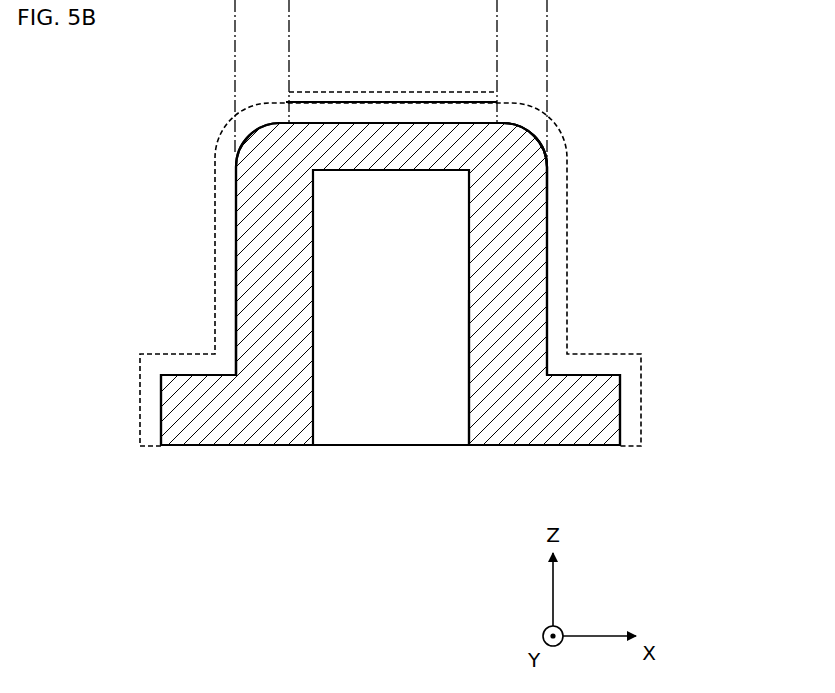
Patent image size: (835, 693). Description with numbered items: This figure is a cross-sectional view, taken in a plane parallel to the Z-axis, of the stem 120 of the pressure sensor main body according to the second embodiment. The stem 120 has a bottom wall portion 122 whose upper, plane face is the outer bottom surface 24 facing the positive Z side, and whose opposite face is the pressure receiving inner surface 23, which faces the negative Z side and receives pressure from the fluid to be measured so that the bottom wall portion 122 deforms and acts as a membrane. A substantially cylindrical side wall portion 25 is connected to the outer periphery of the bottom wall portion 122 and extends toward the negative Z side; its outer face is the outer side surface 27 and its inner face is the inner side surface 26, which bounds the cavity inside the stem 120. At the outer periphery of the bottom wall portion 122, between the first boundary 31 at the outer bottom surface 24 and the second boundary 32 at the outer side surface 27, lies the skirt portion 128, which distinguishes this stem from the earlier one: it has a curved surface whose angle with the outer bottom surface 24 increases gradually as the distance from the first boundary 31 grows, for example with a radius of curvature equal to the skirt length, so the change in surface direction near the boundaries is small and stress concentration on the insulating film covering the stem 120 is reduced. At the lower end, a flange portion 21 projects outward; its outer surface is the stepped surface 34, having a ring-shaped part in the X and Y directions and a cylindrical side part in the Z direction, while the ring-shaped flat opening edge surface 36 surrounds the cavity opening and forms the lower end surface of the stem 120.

The stem 120 is at (676, 51).
The bottom wall portion 122 is at (417, 137).
The skirt portion 128 is at (248, 137).
The flange portion 21 is at (182, 391).
The pressure receiving inner surface 23 is at (375, 168).
The outer bottom surface 24 is at (380, 101).
The side wall portion 25 is at (262, 307).
The inner side surface 26 is at (468, 383).
The outer side surface 27 is at (236, 255).
The first boundary 31 is at (505, 101).
The second boundary 32 is at (548, 165).
The stepped surface 34 is at (587, 377).
The opening edge surface 36 is at (543, 445).